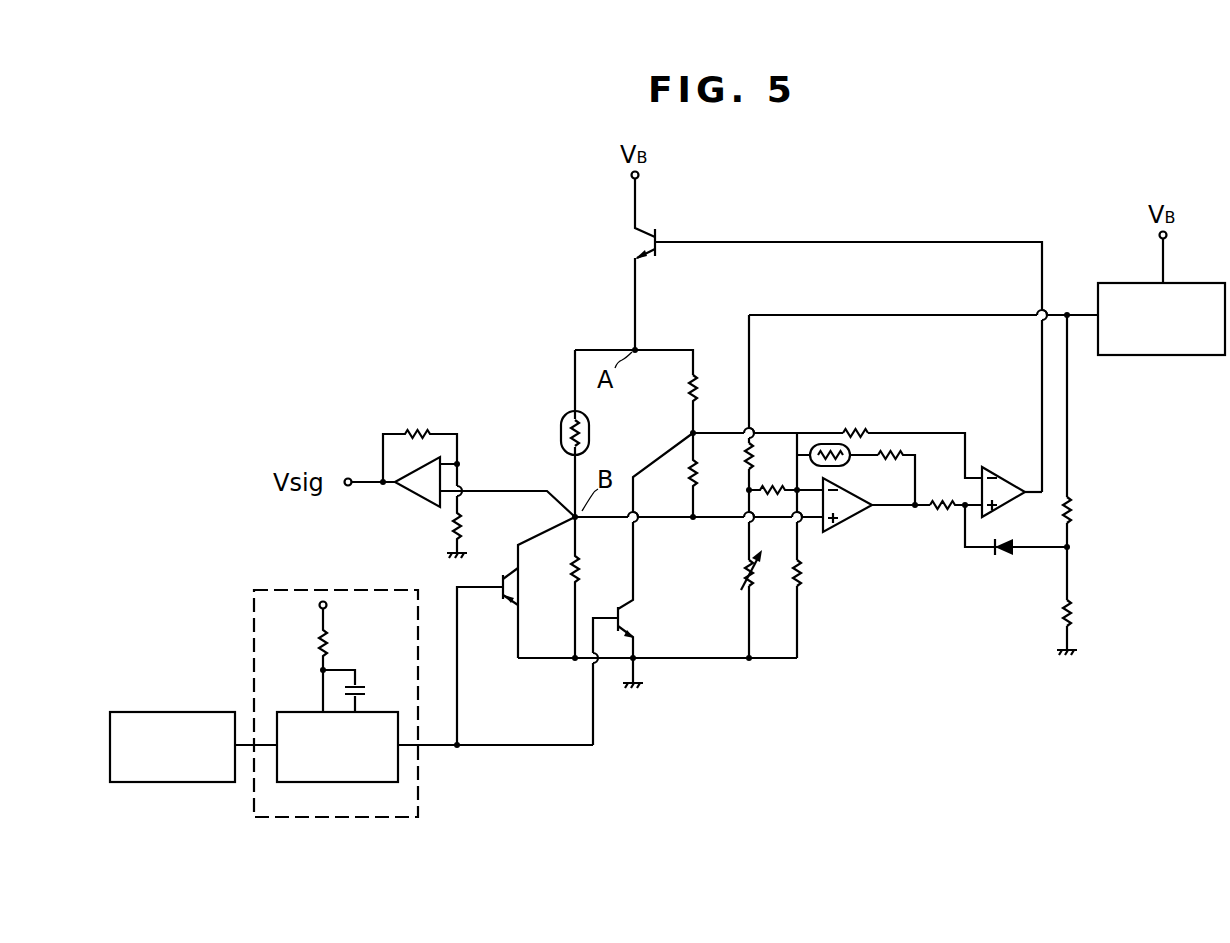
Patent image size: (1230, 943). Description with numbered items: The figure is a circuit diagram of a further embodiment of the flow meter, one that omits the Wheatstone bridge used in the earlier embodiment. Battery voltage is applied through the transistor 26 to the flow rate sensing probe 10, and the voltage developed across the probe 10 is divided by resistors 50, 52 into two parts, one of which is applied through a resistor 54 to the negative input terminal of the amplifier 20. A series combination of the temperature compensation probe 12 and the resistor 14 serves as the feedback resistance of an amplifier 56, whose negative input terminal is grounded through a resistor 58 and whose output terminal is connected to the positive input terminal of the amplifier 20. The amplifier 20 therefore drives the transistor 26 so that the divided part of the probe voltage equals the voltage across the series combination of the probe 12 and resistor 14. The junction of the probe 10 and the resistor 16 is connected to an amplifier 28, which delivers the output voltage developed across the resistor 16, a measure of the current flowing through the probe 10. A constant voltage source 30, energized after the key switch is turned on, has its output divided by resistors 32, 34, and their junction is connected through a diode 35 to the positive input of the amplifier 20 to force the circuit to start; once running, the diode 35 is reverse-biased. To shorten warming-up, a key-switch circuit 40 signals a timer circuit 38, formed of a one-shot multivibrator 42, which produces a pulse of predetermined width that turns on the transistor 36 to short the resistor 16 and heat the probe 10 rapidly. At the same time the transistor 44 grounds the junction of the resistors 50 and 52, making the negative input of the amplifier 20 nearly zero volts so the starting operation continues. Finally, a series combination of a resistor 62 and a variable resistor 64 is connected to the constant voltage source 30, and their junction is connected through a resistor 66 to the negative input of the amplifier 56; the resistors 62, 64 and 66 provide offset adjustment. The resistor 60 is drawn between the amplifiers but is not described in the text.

The flow rate sensing probe 10 is at (560, 433).
The temperature compensation probe 12 is at (822, 444).
The resistor 14 is at (903, 450).
The resistor 16 is at (570, 569).
The differential amplifier 20 is at (1010, 458).
The transistor 26 is at (660, 234).
The amplifier 28 is at (420, 500).
The constant voltage source 30 is at (1165, 356).
The resistor 32 is at (1072, 508).
The resistor 34 is at (1072, 612).
The diode 35 is at (998, 556).
The transistor 36 is at (505, 600).
The timer circuit 38 is at (254, 623).
The key-switch circuit 40 is at (183, 783).
The one-shot multivibrator 42 is at (338, 783).
The transistor 44 is at (615, 606).
The resistor 50 is at (688, 395).
The resistor 52 is at (688, 469).
The resistor 54 is at (857, 430).
The amplifier 56 is at (845, 534).
The resistor 58 is at (801, 588).
The resistor 60 is at (940, 510).
The resistor 62 is at (745, 463).
The variable resistor 64 is at (741, 571).
The resistor 66 is at (768, 480).